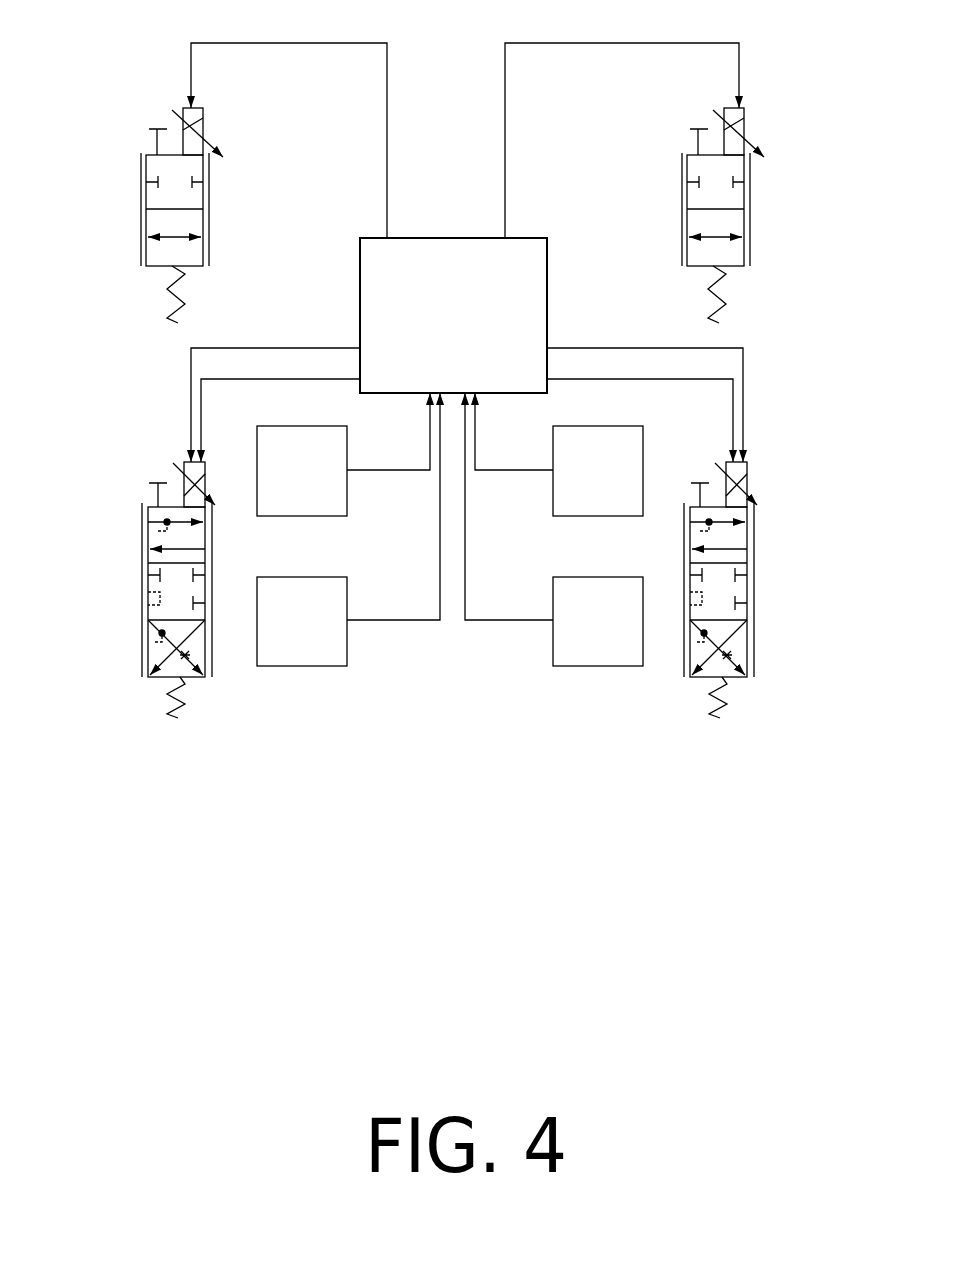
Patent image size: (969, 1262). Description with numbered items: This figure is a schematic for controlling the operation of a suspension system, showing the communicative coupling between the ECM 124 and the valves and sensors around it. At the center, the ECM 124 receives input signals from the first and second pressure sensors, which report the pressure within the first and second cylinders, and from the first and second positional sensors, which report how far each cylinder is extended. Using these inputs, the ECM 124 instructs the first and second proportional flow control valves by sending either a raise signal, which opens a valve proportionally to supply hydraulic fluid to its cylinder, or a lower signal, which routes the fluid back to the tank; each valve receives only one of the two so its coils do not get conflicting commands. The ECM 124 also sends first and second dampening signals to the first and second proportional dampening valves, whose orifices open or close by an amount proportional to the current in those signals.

The ECM 124 is at (433, 372).